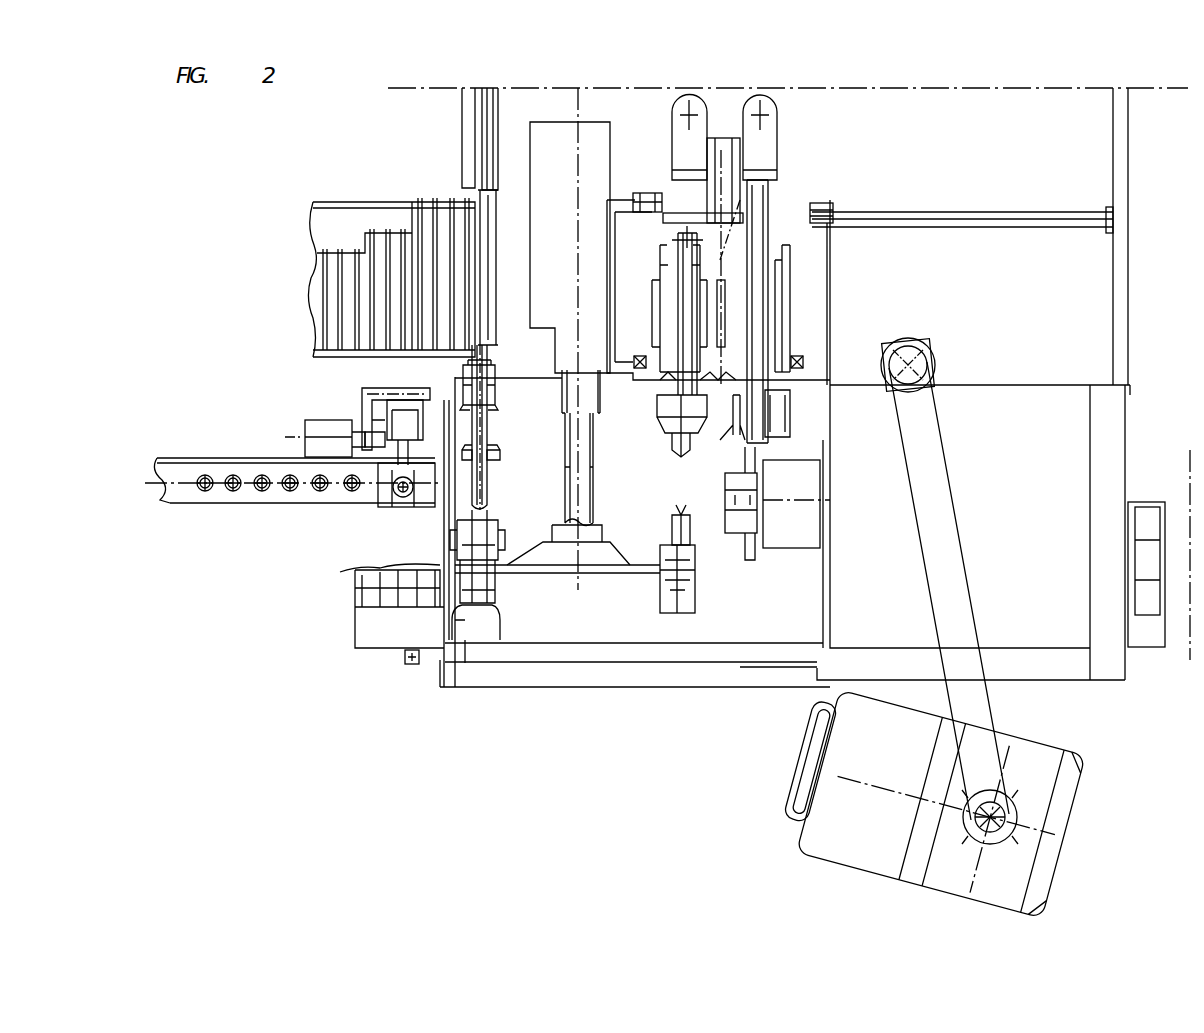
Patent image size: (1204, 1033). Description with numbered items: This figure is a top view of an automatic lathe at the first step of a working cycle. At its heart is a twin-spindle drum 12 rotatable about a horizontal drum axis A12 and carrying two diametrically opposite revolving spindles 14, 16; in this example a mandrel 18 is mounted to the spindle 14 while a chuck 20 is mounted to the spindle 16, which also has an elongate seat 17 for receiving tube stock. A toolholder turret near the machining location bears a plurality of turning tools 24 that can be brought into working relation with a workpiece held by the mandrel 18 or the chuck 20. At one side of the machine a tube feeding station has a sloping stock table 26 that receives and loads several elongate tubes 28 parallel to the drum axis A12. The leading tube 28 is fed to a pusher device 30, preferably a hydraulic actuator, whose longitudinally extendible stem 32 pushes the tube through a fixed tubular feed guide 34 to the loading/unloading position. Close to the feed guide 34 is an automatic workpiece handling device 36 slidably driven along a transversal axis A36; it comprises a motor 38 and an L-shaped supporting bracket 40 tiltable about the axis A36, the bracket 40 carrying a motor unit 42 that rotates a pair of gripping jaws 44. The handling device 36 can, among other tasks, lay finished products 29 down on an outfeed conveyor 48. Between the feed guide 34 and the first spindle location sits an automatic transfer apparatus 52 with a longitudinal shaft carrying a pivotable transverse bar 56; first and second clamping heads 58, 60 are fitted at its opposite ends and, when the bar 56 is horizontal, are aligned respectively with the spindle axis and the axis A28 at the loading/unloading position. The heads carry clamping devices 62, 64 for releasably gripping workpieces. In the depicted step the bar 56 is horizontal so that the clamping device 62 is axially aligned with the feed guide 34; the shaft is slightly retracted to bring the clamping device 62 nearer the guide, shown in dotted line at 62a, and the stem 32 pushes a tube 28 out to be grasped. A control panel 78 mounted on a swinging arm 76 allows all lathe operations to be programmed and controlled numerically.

The twin-spindle drum 12 is at (880, 220).
The spindle 14 is at (665, 290).
The spindle 16 is at (790, 300).
The elongate seat 17 is at (760, 322).
The mandrel 18 is at (672, 405).
The chuck 20 is at (787, 415).
The turning tools 24 is at (752, 560).
The sloping stock table 26 is at (357, 205).
The elongate tubes 28 is at (425, 235).
The finished products 29 is at (292, 490).
The pusher device 30 is at (490, 146).
The longitudinally extendible stem 32 is at (484, 320).
The tubular feed guide 34 is at (497, 395).
The automatic workpiece handling device 36 is at (320, 404).
The motor 38 is at (310, 445).
The L-shaped supporting bracket 40 is at (375, 395).
The motor unit 42 is at (412, 430).
The gripping jaws 44 is at (385, 497).
The outfeed conveyor 48 is at (250, 505).
The automatic transfer apparatus 52 is at (611, 590).
The transverse bar 56 is at (600, 553).
The first workpiece clamping head 58 is at (490, 605).
The second workpiece clamping head 60 is at (690, 575).
The clamping device 62 is at (500, 545).
The clamping device in retracted position 62a is at (492, 450).
The clamping device 64 is at (683, 515).
The swinging arm 76 is at (965, 600).
The control panel 78 is at (840, 752).
The drum axis A12 is at (735, 245).
The loading/unloading position axis A28 is at (485, 487).
The transversal axis A36 is at (305, 437).